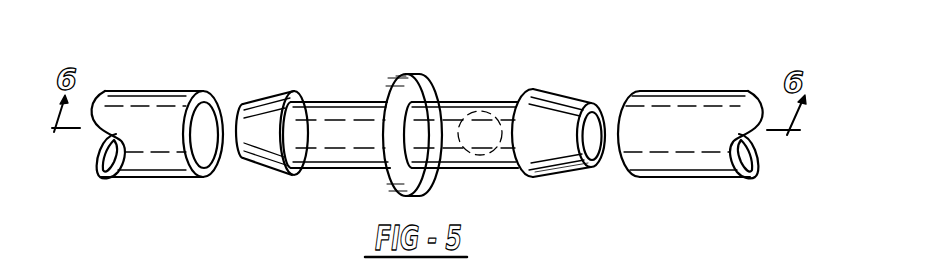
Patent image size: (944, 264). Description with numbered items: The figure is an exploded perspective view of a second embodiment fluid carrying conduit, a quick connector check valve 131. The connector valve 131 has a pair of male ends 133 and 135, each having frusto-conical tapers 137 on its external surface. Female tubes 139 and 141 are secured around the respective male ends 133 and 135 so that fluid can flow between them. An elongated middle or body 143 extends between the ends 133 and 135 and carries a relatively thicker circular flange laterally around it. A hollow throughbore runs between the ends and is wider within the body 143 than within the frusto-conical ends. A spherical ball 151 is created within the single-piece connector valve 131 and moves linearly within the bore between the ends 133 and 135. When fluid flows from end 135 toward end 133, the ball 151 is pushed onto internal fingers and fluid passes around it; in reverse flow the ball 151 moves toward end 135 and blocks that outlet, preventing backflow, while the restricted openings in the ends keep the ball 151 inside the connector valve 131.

The quick connector check valve 131 is at (446, 55).
The male end 133 is at (603, 101).
The male end 135 is at (234, 106).
The frusto-conical taper 137 is at (560, 158).
The female tube 139 is at (698, 110).
The female tube 141 is at (150, 107).
The body 143 is at (345, 122).
The spherical ball 151 is at (487, 117).